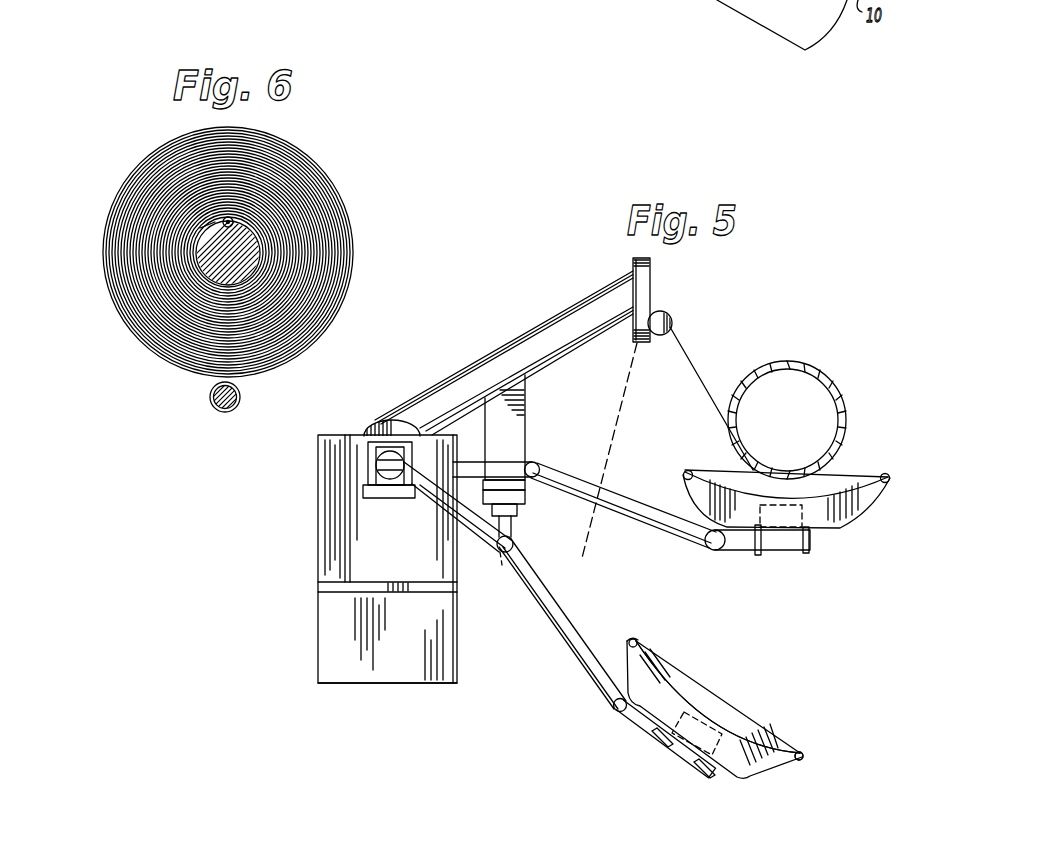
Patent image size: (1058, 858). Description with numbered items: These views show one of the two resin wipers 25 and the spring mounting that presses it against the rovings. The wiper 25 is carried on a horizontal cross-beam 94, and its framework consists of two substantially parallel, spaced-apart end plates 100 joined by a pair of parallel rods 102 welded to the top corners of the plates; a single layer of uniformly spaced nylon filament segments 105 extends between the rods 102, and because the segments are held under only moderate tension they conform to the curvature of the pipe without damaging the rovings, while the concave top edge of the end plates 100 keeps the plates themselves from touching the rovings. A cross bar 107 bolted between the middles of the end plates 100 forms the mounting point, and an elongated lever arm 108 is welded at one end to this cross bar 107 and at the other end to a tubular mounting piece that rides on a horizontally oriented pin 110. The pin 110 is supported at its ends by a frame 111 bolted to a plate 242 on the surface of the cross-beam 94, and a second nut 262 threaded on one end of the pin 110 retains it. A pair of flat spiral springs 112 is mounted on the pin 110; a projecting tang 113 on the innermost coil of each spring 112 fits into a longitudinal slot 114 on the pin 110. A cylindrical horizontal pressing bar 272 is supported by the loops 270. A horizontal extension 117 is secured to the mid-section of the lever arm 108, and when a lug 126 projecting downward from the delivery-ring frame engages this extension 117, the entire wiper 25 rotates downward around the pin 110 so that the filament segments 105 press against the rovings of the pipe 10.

In FIG. 5, the tire 10 is at (798, 363).
In FIG. 5, the wiper 25 is at (846, 540).
In FIG. 5, the horizontal cross-beam 94 is at (412, 682).
In FIG. 5, the end plate 100 is at (832, 526).
In FIG. 5, the rod 102 is at (802, 755).
In FIG. 5, the filament segment 105 is at (697, 677).
In FIG. 5, the cross bar 107 is at (787, 523).
In FIG. 5, the lever arm 108 is at (563, 490).
In FIG. 6, the pin 110 is at (213, 258).
In FIG. 5, the pin 110 is at (372, 422).
In FIG. 5, the frame 111 is at (320, 547).
In FIG. 6, the flat spiral spring 112 is at (347, 297).
In FIG. 5, the flat spiral spring 112 is at (428, 398).
In FIG. 6, the projecting tang 113 is at (233, 220).
In FIG. 6, the longitudinal slot 114 is at (207, 231).
In FIG. 5, the horizontal extension 117 is at (503, 565).
In FIG. 5, the lug 126 is at (496, 535).
In FIG. 5, the plate 242 is at (320, 585).
In FIG. 5, the second nut 262 is at (377, 463).
In FIG. 6, the loop 270 is at (207, 403).
In FIG. 6, the pressing bar 272 is at (240, 400).